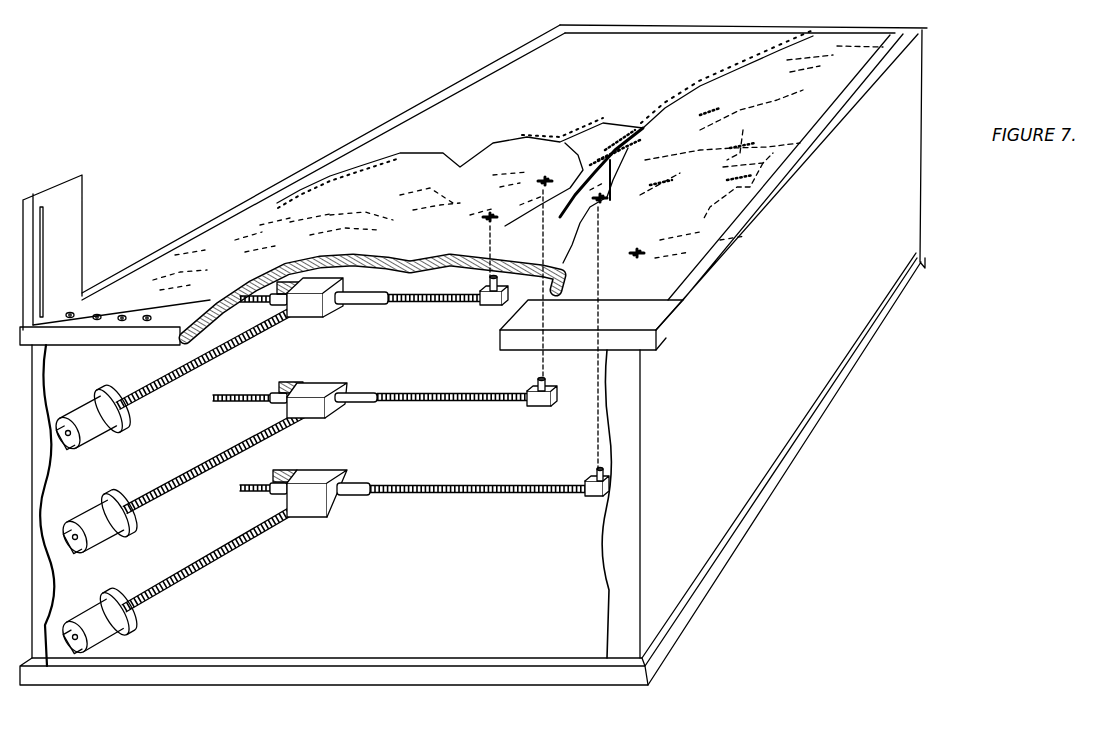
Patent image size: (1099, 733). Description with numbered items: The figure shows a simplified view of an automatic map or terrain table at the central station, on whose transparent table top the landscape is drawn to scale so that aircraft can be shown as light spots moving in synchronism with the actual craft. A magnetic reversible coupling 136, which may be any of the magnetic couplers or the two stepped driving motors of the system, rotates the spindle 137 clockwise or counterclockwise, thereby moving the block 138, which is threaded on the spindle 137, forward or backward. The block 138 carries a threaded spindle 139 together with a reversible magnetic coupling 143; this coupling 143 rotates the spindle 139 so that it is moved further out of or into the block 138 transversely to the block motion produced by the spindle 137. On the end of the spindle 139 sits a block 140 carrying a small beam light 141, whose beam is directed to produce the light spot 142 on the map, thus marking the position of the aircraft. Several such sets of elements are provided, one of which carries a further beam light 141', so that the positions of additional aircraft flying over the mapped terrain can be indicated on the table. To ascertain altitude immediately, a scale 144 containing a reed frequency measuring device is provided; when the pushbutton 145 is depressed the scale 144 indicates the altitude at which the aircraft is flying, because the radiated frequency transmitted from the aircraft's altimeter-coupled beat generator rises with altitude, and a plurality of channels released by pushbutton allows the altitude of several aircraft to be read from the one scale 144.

The magnetic reversible coupling 136 is at (96, 432).
The spindle 137 is at (203, 366).
The block 138 is at (316, 308).
The threaded spindle 139 is at (410, 303).
The block 140 is at (492, 306).
The small beam light 141 is at (473, 283).
The small beam light 141' is at (570, 423).
The light spot 142 is at (490, 212).
The reversible magnetic coupling 143 is at (277, 300).
The scale 144 is at (74, 200).
The pushbutton 145 is at (68, 317).